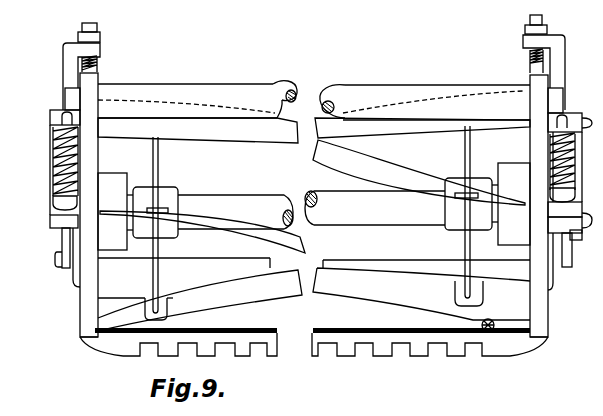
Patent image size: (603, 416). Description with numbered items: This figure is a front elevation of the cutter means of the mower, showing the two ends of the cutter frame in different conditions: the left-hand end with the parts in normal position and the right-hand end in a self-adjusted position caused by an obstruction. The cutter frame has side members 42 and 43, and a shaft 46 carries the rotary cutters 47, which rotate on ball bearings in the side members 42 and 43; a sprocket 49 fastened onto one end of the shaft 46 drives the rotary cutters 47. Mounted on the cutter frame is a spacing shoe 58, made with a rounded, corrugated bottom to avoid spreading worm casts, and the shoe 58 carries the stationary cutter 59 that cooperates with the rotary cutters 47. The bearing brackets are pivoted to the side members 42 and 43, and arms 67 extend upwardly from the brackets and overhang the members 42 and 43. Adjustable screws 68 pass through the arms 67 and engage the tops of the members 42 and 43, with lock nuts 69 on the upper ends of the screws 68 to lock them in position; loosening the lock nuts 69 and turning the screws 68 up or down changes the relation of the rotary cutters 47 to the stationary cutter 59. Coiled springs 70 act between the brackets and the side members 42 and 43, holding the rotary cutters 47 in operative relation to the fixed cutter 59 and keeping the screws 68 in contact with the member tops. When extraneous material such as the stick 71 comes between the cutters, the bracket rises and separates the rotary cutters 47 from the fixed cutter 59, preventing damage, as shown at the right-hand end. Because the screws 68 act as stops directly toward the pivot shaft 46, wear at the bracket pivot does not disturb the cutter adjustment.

The side member 42 is at (535, 299).
The side member 43 is at (85, 293).
The shaft 46 is at (347, 210).
The rotary cutters 47 is at (200, 297).
The sprocket 49 is at (578, 252).
The spacing shoe 58 is at (243, 350).
The stationary cutter 59 is at (502, 331).
The arms 67 is at (73, 48).
The adjustable screws 68 is at (100, 62).
The lock nuts 69 is at (95, 33).
The coiled springs 70 is at (78, 170).
The stick 71 is at (489, 330).